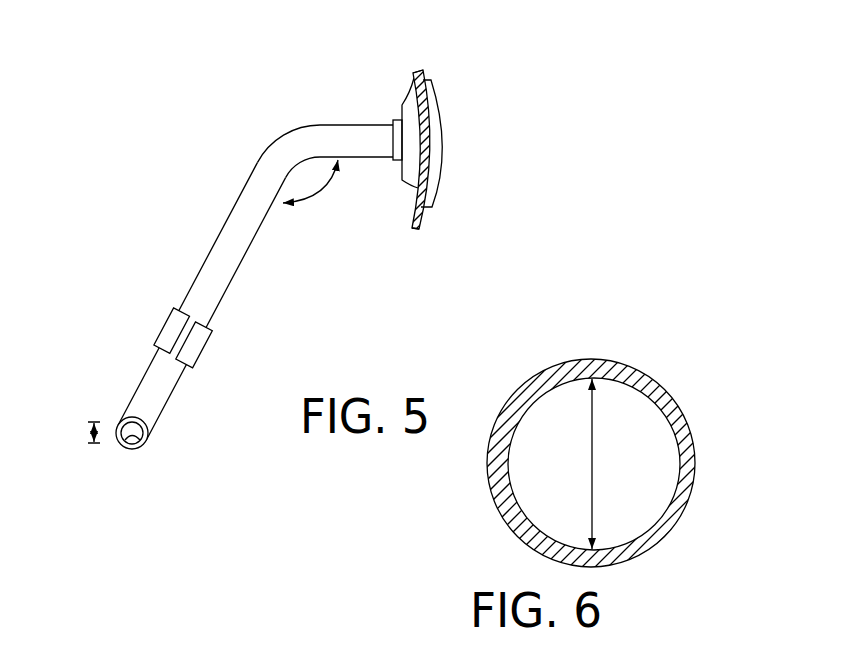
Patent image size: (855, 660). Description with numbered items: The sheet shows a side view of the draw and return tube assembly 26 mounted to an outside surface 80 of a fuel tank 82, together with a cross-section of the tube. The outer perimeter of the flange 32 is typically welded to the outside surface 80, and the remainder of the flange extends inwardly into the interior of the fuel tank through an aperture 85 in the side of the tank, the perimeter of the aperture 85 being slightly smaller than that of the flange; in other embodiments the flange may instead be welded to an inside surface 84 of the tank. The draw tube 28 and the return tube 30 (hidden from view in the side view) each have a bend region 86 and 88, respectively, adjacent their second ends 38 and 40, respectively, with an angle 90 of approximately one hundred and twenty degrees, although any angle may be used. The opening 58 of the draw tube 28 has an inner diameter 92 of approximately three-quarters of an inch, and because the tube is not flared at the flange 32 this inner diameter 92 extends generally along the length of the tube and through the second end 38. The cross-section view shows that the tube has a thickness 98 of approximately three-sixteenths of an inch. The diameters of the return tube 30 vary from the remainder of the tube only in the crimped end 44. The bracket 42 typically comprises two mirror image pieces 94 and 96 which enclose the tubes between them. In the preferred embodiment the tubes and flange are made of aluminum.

In FIG. 5, the draw and return tube assembly 26 is at (465, 157).
In FIG. 5, the draw tube 28 is at (258, 215).
In FIG. 5, the return tube 30 is at (262, 150).
In FIG. 6, the return tube 30 is at (670, 402).
In FIG. 5, the flange 32 is at (406, 108).
In FIG. 5, the second end 38 is at (357, 147).
In FIG. 5, the second end 40 is at (342, 116).
In FIG. 5, the bracket 42 is at (218, 327).
In FIG. 5, the crimped end 44 is at (102, 402).
In FIG. 5, the opening 58 is at (146, 445).
In FIG. 5, the outside surface 80 is at (433, 138).
In FIG. 5, the fuel tank 82 is at (421, 76).
In FIG. 5, the inside surface 84 is at (410, 211).
In FIG. 5, the aperture 85 is at (447, 192).
In FIG. 5, the bend region 86 is at (290, 161).
In FIG. 5, the bend region 88 is at (306, 112).
In FIG. 5, the angle 90 is at (327, 192).
In FIG. 5, the inner diameter 92 is at (92, 433).
In FIG. 6, the inner diameter 92 is at (592, 447).
In FIG. 5, the mirror image piece 94 is at (172, 333).
In FIG. 5, the mirror image piece 96 is at (200, 344).
In FIG. 6, the thickness 98 is at (680, 531).